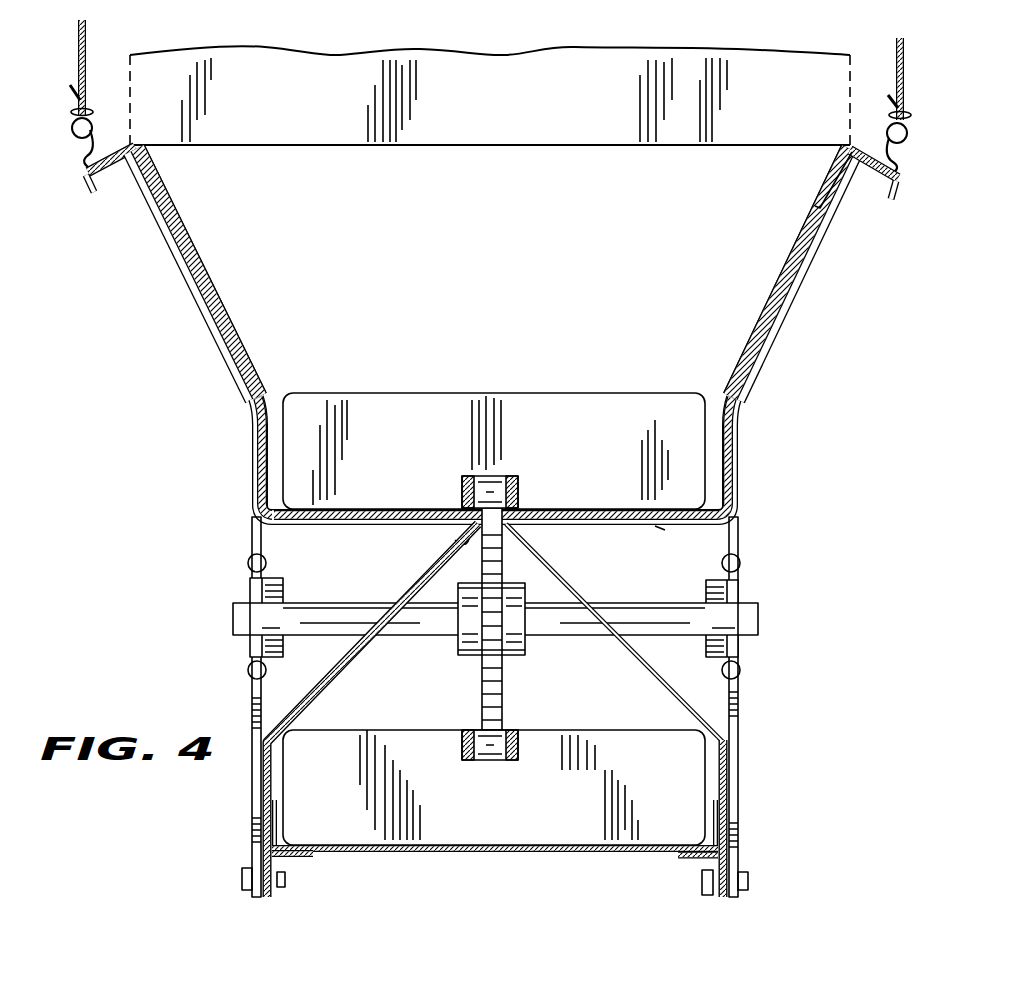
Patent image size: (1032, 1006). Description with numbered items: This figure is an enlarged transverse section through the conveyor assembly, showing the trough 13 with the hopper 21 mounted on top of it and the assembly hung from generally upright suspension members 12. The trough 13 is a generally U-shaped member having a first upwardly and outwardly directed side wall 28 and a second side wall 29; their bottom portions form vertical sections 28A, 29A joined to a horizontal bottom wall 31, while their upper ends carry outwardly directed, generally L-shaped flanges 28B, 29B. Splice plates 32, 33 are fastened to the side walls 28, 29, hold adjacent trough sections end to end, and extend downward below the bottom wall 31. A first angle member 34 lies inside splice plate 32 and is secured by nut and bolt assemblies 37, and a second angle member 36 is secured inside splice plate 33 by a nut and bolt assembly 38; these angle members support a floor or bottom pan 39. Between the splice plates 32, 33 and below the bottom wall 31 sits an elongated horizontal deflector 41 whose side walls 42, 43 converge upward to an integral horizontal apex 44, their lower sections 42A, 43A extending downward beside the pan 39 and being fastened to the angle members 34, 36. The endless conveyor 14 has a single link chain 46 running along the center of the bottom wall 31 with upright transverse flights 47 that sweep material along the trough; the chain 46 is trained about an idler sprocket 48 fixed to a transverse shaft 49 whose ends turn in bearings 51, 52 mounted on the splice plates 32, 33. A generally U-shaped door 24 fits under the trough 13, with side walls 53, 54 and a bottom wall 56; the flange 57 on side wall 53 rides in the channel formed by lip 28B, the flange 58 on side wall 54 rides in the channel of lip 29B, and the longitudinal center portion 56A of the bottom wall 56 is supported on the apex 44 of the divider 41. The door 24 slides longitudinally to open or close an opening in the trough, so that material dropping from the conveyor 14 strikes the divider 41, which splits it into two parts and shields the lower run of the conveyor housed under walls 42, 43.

The suspension members 12 is at (86, 48).
The trough 13 is at (480, 317).
The endless conveyor 14 is at (593, 320).
The hopper 21 is at (805, 65).
The door 24 is at (167, 258).
The first side wall 28 is at (202, 273).
The vertical section 28A is at (268, 456).
The L-shaped flange 28B is at (95, 168).
The second side wall 29 is at (767, 273).
The vertical section 29A is at (720, 420).
The L-shaped flange 29B is at (907, 170).
The bottom wall 31 is at (400, 510).
The splice plate 32 is at (250, 538).
The splice plate 33 is at (738, 548).
The first angle member 34 is at (293, 858).
The second angle member 36 is at (692, 860).
The nut and bolt assemblies 37 is at (242, 879).
The nut and bolt assembly 38 is at (748, 883).
The bottom pan 39 is at (437, 853).
The deflector 41 is at (593, 591).
The side wall 42 is at (405, 588).
The lower section 42A is at (272, 762).
The side wall 43 is at (614, 710).
The lower section 43A is at (718, 782).
The apex 44 is at (462, 545).
The link chain 46 is at (505, 478).
The flights 47 is at (517, 402).
The idler sprocket 48 is at (482, 705).
The transverse shaft 49 is at (423, 632).
The bearing 51 is at (278, 595).
The bearing 52 is at (710, 587).
The side wall 53 is at (205, 287).
The side wall 54 is at (770, 322).
The bottom wall 56 is at (660, 528).
The longitudinal center portion 56A is at (518, 505).
The flange 57 is at (120, 165).
The flange 58 is at (873, 172).